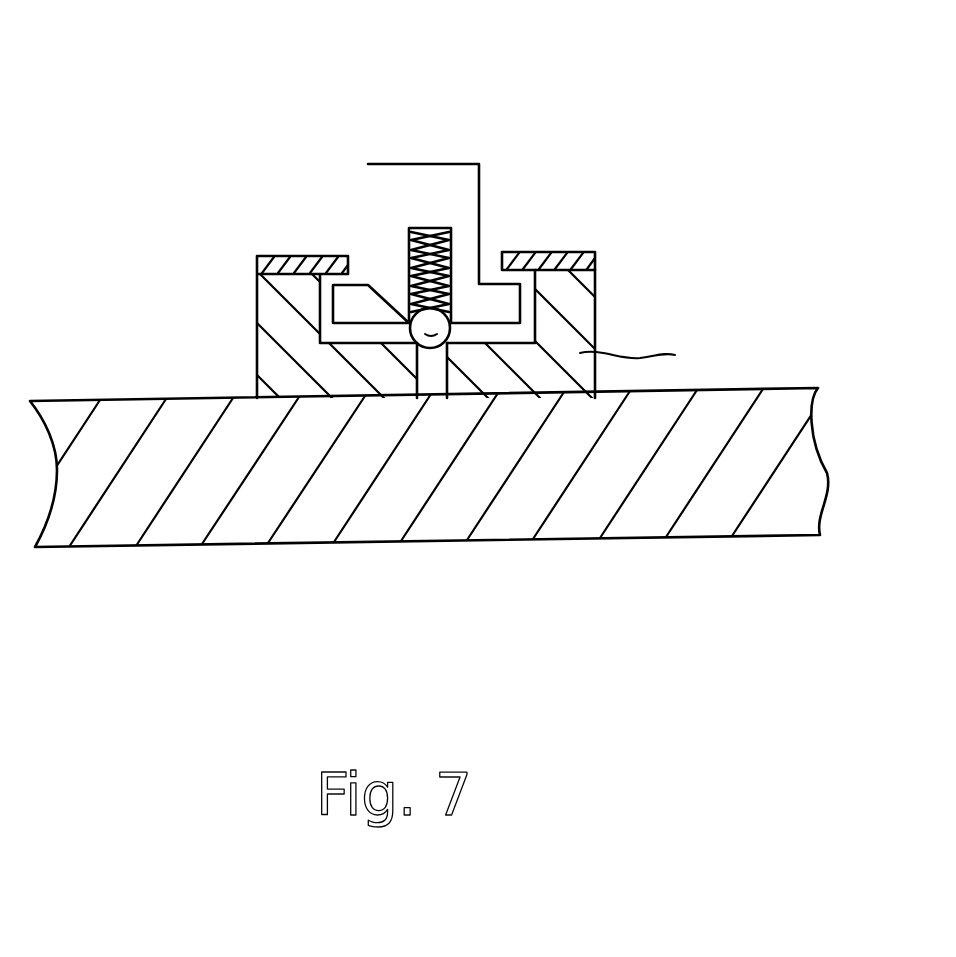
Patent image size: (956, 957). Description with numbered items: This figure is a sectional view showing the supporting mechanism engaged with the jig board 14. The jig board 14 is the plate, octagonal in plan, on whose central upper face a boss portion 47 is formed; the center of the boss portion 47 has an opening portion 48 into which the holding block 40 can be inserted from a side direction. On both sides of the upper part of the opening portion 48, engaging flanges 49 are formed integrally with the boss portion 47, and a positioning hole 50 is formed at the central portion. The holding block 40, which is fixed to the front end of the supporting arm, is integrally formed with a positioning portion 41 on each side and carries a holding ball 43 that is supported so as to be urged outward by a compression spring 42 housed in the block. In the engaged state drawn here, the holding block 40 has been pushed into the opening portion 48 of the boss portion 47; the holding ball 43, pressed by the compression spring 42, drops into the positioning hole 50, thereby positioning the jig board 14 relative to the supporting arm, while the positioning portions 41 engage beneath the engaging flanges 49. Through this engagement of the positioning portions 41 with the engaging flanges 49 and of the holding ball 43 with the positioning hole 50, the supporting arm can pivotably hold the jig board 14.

The jig board 14 is at (772, 417).
The holding block 40 is at (450, 183).
The positioning portion 41 is at (312, 322).
The compression spring 42 is at (448, 237).
The holding ball 43 is at (477, 384).
The boss portion 47 is at (610, 256).
The opening portion 48 is at (317, 326).
The engaging flange 49 is at (340, 246).
The positioning hole 50 is at (421, 384).